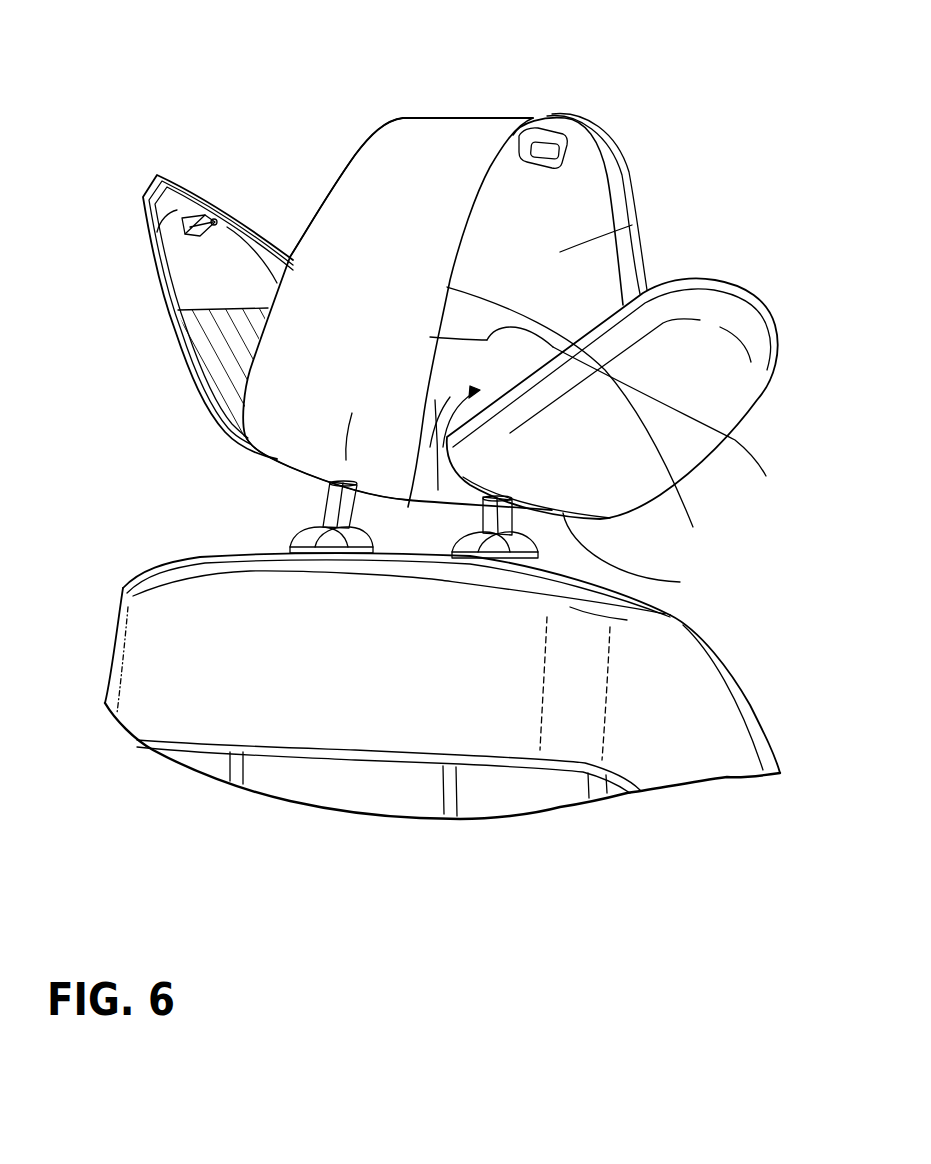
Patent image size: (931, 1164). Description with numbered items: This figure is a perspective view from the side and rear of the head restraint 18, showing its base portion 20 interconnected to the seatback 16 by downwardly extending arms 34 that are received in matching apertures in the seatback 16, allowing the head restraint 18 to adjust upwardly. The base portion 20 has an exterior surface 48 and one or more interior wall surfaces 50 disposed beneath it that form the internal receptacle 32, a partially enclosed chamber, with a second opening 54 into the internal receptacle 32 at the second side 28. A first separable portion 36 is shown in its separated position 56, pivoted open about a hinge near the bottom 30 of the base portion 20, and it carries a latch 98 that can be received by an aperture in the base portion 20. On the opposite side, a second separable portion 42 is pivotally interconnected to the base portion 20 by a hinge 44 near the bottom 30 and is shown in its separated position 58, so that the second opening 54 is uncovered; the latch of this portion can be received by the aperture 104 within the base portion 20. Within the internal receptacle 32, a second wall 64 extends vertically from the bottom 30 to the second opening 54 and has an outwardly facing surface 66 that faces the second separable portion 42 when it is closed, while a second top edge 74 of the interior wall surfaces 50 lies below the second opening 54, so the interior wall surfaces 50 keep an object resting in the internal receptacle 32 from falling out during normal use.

The seatback 16 is at (680, 700).
The head restraint 18 is at (464, 112).
The base portion 20 is at (352, 413).
The second side 28 is at (613, 416).
The bottom 30 is at (298, 472).
The internal receptacle 32 is at (558, 252).
The downwardly extending arms 34 is at (327, 507).
The first separable portion 36 is at (143, 207).
The second separable portion 42 is at (733, 315).
The hinge 44 is at (639, 556).
The exterior surface 48 is at (398, 193).
The interior wall surfaces 50 is at (533, 190).
The second opening 54 is at (576, 168).
The separated position 56 is at (152, 297).
The separated position 58 is at (788, 371).
The second wall 64 is at (437, 463).
The outwardly facing surface 66 is at (435, 400).
The second top edge 74 is at (581, 424).
The latch 98 is at (214, 219).
The aperture 104 is at (543, 146).